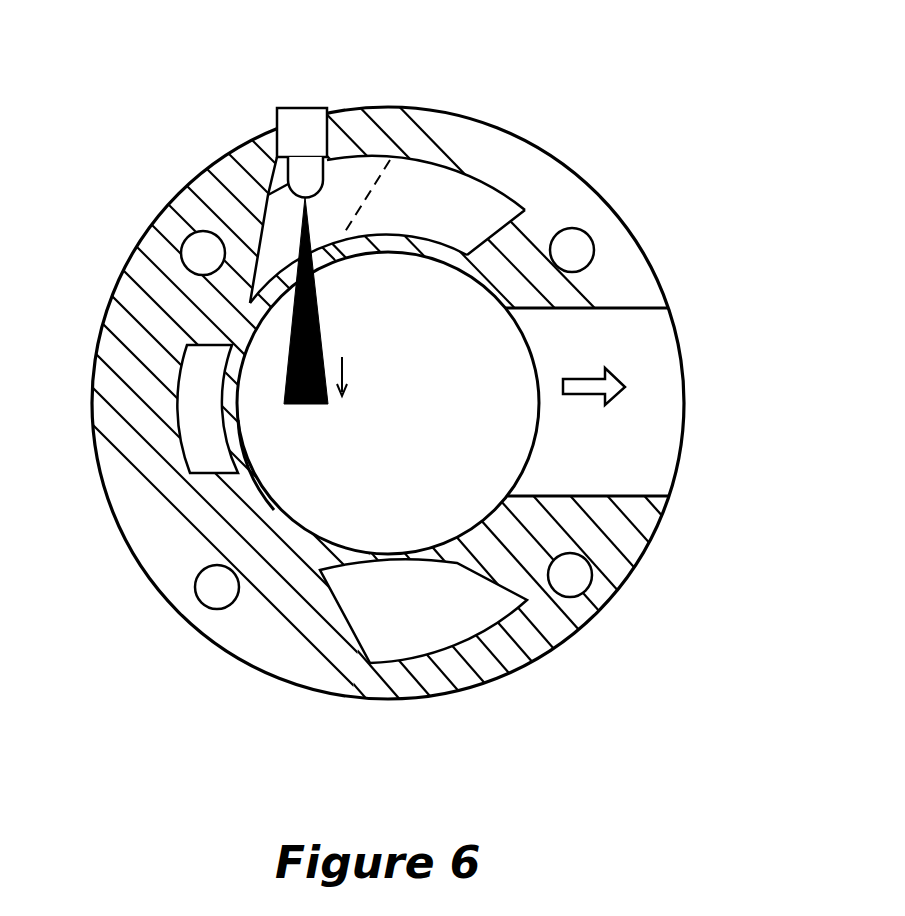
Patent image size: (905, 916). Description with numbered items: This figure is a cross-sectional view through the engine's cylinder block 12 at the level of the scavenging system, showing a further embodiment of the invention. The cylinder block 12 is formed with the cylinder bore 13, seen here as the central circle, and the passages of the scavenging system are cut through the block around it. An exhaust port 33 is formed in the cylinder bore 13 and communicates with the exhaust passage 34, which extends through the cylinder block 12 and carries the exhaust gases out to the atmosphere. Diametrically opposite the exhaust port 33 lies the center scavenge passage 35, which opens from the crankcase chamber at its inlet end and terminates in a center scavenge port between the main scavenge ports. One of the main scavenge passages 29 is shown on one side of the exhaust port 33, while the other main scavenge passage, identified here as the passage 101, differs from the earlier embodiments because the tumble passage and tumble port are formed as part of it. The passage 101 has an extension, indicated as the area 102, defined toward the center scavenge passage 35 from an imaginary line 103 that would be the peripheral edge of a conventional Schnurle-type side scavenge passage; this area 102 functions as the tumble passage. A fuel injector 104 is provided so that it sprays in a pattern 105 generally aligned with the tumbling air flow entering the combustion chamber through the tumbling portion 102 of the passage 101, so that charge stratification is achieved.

The cylinder block 12 is at (527, 176).
The cylinder bore 13 is at (291, 505).
The main scavenge passage 29 is at (403, 595).
The exhaust port 33 is at (558, 436).
The exhaust passage 34 is at (655, 465).
The center scavenge passage 35 is at (198, 408).
The scavenge passage 101 is at (403, 228).
The extension area 102 is at (350, 177).
The imaginary line 103 is at (390, 160).
The fuel injector 104 is at (295, 120).
The spray pattern 105 is at (323, 327).